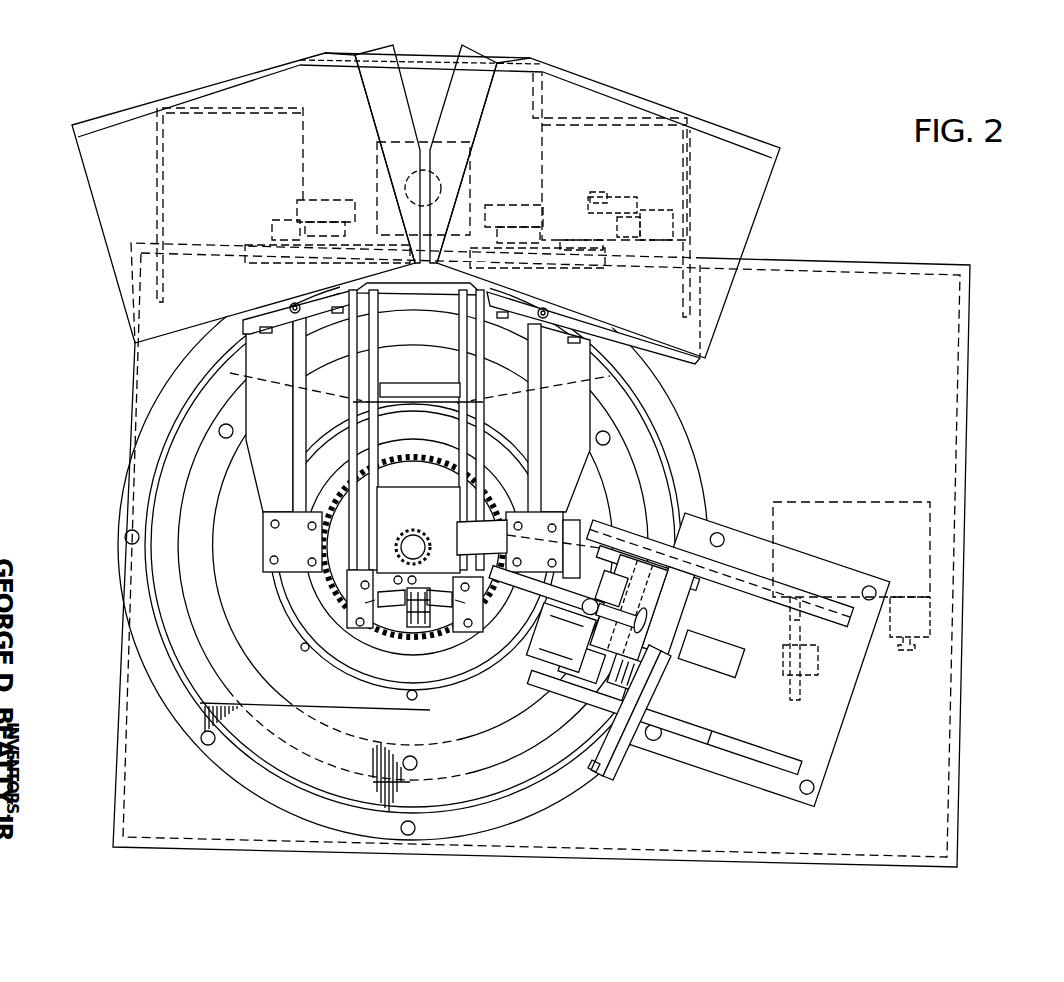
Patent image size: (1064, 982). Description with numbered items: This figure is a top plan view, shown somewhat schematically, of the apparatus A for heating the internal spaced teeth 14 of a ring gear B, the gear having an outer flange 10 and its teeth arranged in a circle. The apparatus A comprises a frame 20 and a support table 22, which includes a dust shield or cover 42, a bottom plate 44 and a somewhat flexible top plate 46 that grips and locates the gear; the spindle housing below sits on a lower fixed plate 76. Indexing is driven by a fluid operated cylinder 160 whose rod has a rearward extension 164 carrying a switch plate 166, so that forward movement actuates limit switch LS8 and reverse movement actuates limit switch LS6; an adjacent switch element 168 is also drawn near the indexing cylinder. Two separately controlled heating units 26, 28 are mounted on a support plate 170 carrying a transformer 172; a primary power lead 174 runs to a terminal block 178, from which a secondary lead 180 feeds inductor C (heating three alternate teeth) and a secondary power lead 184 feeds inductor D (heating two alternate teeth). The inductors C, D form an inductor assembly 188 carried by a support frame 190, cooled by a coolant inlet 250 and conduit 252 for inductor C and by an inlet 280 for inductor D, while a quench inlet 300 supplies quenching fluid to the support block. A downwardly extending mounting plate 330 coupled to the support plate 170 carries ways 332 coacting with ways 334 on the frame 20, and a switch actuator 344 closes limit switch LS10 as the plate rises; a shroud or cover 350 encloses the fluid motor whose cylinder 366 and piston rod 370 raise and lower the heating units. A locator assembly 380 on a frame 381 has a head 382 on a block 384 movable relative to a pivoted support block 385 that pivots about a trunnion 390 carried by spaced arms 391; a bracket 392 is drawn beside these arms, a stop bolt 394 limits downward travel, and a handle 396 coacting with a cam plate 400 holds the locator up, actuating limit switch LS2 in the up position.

The outer flange 10 is at (388, 670).
The spaced teeth 14 is at (443, 640).
The frame 20 is at (973, 420).
The support table 22 is at (279, 671).
The first heating unit 26 is at (770, 190).
The second heating unit 28 is at (88, 208).
The dust shield or cover 42 is at (180, 646).
The bottom plate 44 is at (247, 568).
The top plate 46 is at (265, 602).
The lower fixed plate 76 is at (190, 492).
The fluid operated cylinder 160 is at (710, 712).
The rearward extension 164 is at (800, 703).
The switch plate 166 is at (843, 668).
The switch actuator 168 is at (905, 592).
The support plate 170 is at (450, 102).
The transformer 172 is at (745, 227).
The primary power lead 174 is at (603, 474).
The terminal block 178 is at (277, 513).
The secondary lead 180 is at (487, 712).
The secondary power lead 184 is at (320, 603).
The inductor assembly 188 is at (399, 655).
The support frame 190 is at (433, 485).
The coolant inlet 250 is at (565, 312).
The conduit 252 is at (665, 398).
The inlet 280 is at (293, 302).
The quenching fluid inlet 300 is at (427, 532).
The mounting plate 330 is at (318, 198).
The ways 332 is at (310, 223).
The ways 334 is at (272, 228).
The switch actuator 344 is at (599, 182).
The shroud or cover 350 is at (157, 173).
The cylinder 366 is at (473, 158).
The piston rod 370 is at (441, 176).
The locator assembly 380 is at (580, 735).
The frame 381 is at (807, 742).
The head 382 is at (637, 640).
The block 384 is at (700, 660).
The pivoted support block 385 is at (617, 553).
The trunnion 390 is at (573, 727).
The spaced arms 391 is at (678, 528).
The bracket 392 is at (655, 675).
The stop bolt 394 is at (570, 518).
The handle 396 is at (613, 775).
The cam plate 400 is at (587, 707).
The limit switch LS2 is at (757, 595).
The limit switch LS6 is at (930, 628).
The limit switch LS8 is at (813, 618).
The limit switch LS10 is at (665, 187).
The apparatus A is at (967, 212).
The ring gear B is at (331, 654).
The inductor C is at (455, 636).
The inductor D is at (389, 640).